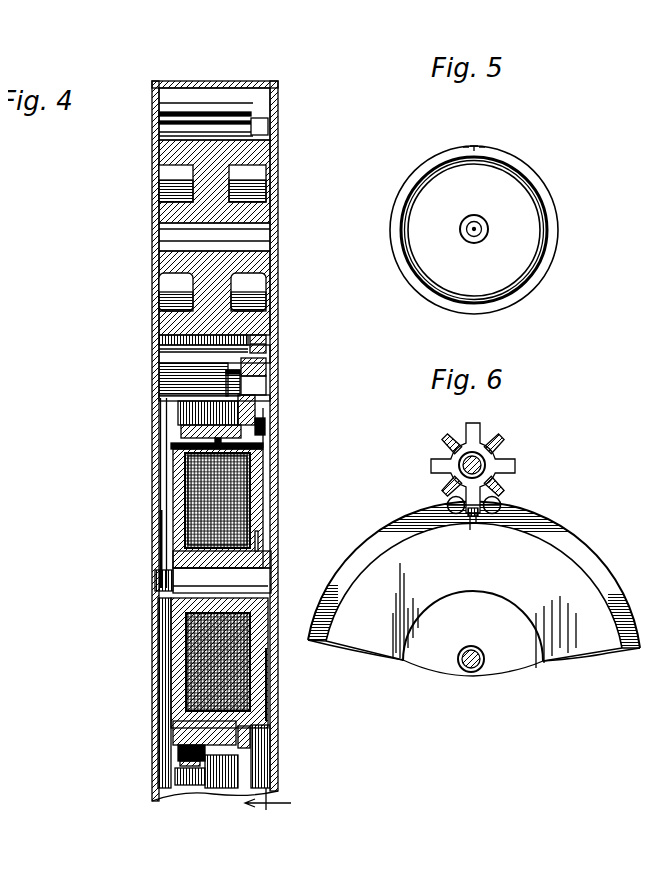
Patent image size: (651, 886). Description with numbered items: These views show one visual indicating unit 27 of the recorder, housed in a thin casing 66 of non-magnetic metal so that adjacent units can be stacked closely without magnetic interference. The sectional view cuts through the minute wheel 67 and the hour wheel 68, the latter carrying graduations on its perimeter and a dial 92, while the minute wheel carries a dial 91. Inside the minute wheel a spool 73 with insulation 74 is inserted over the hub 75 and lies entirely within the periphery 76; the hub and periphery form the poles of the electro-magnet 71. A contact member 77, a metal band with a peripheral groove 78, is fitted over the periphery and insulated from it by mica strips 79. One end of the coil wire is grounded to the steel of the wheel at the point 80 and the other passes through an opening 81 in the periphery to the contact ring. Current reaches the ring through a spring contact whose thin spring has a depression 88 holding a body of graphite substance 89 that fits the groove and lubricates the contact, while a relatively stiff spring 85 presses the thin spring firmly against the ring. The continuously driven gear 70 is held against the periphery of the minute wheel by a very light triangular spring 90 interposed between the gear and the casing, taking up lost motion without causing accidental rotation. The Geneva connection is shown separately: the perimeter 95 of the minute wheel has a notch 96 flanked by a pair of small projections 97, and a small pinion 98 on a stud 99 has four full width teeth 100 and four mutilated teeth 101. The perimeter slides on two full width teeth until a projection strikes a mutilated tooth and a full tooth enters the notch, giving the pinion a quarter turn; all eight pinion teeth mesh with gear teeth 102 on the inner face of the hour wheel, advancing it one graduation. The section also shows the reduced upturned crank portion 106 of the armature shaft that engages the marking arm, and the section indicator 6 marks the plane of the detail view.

In FIG. 4, the section line 6 is at (268, 806).
In FIG. 4, the visual indicating unit 27 is at (140, 294).
In FIG. 4, the casing 66 is at (158, 345).
In FIG. 4, the minute wheel 67 is at (262, 422).
In FIG. 5, the minute wheel 67 is at (513, 257).
In FIG. 6, the minute wheel 67 is at (556, 545).
In FIG. 4, the hour wheel 68 is at (155, 147).
In FIG. 4, the continuously driven gear 70 is at (200, 425).
In FIG. 4, the electro-magnet 71 is at (262, 472).
In FIG. 4, the spool 73 is at (250, 482).
In FIG. 4, the insulation 74 is at (236, 502).
In FIG. 4, the hub 75 is at (150, 612).
In FIG. 4, the periphery 76 is at (230, 438).
In FIG. 4, the contact member 77 is at (160, 407).
In FIG. 5, the contact member 77 is at (541, 243).
In FIG. 4, the peripheral groove 78 is at (180, 402).
In FIG. 5, the peripheral groove 78 is at (550, 221).
In FIG. 4, the mica strips 79 is at (246, 405).
In FIG. 4, the ground connection 80 is at (249, 530).
In FIG. 4, the opening 81 is at (205, 437).
In FIG. 4, the stiff spring 85 is at (188, 770).
In FIG. 4, the depression 88 is at (162, 752).
In FIG. 4, the graphite substance 89 is at (221, 766).
In FIG. 4, the triangular spring 90 is at (152, 560).
In FIG. 4, the dial 91 is at (187, 379).
In FIG. 4, the dial 92 is at (188, 132).
In FIG. 4, the perimeter 95 is at (262, 748).
In FIG. 6, the perimeter 95 is at (524, 501).
In FIG. 5, the notch 96 is at (470, 136).
In FIG. 6, the notch 96 is at (462, 508).
In FIG. 4, the projections 97 is at (256, 422).
In FIG. 5, the projections 97 is at (457, 137).
In FIG. 6, the projections 97 is at (440, 500).
In FIG. 4, the pinion 98 is at (250, 352).
In FIG. 6, the pinion 98 is at (478, 451).
In FIG. 4, the stud 99 is at (250, 378).
In FIG. 6, the stud 99 is at (434, 457).
In FIG. 6, the full width teeth 100 is at (501, 458).
In FIG. 6, the mutilated teeth 101 is at (497, 481).
In FIG. 4, the gear teeth 102 is at (250, 335).
In FIG. 4, the crank portion 106 is at (139, 226).